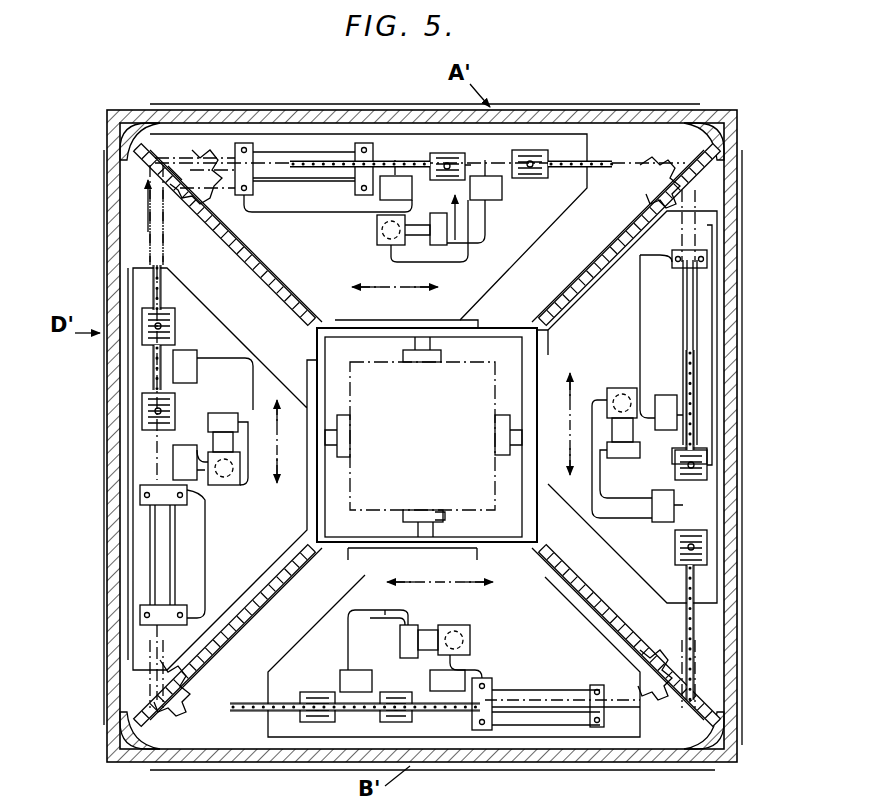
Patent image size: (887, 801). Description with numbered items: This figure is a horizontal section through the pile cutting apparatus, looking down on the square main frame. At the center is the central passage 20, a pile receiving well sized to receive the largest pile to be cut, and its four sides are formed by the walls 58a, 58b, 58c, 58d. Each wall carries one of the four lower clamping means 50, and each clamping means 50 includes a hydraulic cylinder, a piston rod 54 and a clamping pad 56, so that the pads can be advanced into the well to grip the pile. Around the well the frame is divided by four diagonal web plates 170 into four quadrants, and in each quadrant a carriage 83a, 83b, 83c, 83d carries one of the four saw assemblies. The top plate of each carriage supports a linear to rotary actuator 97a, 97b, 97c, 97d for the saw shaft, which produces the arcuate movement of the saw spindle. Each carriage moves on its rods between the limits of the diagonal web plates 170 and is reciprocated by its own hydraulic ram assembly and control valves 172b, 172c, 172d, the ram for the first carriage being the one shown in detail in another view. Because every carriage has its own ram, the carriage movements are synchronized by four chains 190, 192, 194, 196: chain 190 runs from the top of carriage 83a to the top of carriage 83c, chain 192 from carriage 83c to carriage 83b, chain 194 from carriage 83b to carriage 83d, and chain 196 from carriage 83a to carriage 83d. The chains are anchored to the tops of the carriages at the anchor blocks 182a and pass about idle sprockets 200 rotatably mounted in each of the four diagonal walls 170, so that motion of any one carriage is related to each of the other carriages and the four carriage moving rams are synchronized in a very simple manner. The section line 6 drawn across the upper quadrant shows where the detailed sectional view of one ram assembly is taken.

The central passage 20 is at (326, 488).
The clamping means 50 is at (491, 432).
The piston rod 54 is at (432, 522).
The clamping pad 56 is at (425, 508).
The wall 58a is at (465, 320).
The wall 58b is at (355, 555).
The wall 58c is at (540, 342).
The wall 58d is at (300, 356).
The carriage 83a is at (316, 246).
The carriage 83b is at (540, 610).
The carriage 83c is at (632, 309).
The carriage 83d is at (283, 516).
The linear to rotary actuator 97a is at (380, 246).
The valve unit 97b is at (430, 625).
The valve unit 97c is at (618, 392).
The valve unit 97d is at (210, 428).
The diagonal web plate 170 is at (583, 270).
The hydraulic ram assembly and control valves 172b is at (545, 664).
The hydraulic ram assembly and control valves 172c is at (662, 347).
The hydraulic ram assembly and control valves 172d is at (188, 562).
The slide block 182a is at (395, 153).
The chain 190 is at (592, 160).
The chain 192 is at (700, 632).
The chain 194 is at (150, 466).
The chain 196 is at (305, 160).
The sprocket 200 is at (190, 205).
The section line 6 is at (291, 215).